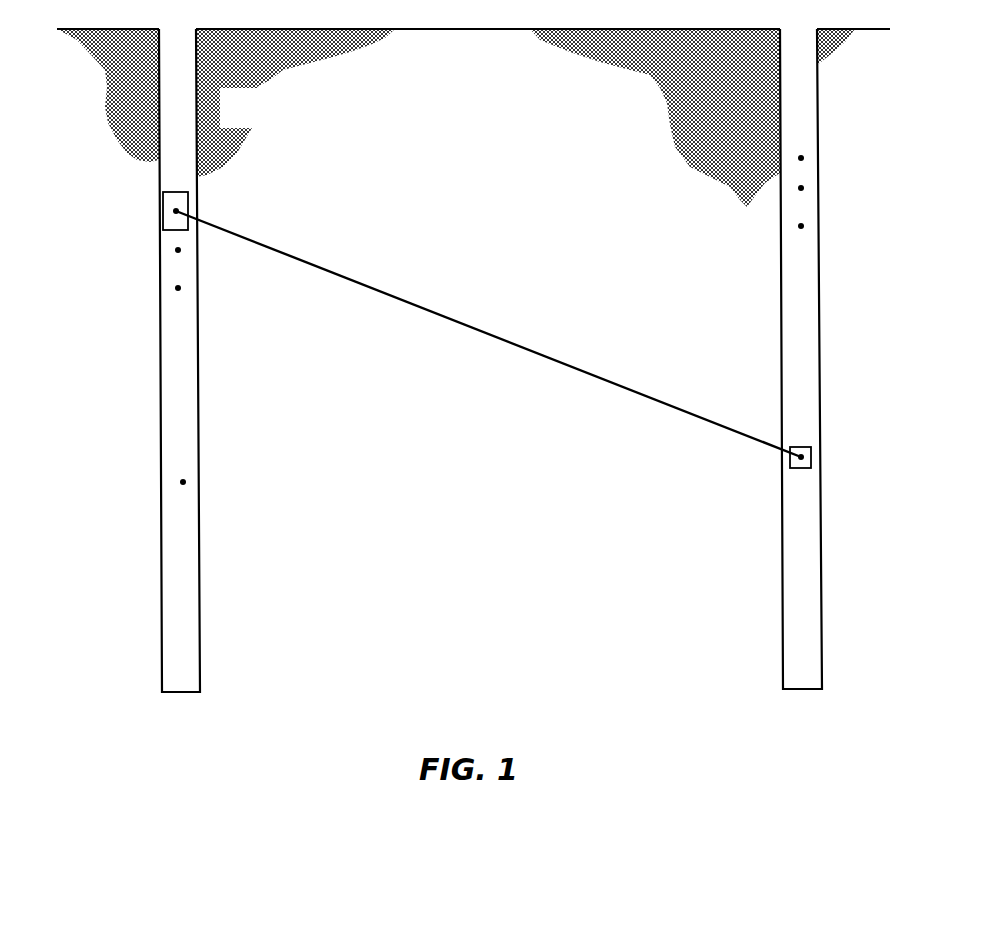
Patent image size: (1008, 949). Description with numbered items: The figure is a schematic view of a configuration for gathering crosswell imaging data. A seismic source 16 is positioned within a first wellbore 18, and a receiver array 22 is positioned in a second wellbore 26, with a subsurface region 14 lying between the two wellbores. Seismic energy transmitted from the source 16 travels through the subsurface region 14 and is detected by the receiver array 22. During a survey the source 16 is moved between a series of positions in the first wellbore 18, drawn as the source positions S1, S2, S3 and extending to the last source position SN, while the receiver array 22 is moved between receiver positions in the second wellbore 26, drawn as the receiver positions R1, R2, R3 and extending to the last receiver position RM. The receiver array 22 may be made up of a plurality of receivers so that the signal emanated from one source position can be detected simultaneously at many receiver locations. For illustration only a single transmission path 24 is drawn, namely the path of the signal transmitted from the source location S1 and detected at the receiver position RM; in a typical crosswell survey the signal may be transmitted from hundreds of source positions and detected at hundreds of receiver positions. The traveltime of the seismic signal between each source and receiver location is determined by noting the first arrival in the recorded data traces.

The subsurface region 14 is at (469, 157).
The source 16 is at (175, 191).
The first wellbore 18 is at (223, 107).
The receiver array 22 is at (790, 468).
The transmission path 24 is at (443, 313).
The second wellbore 26 is at (781, 297).
The first source position S1 is at (176, 211).
The second source position S2 is at (178, 250).
The third source position S3 is at (178, 288).
The last source position SN is at (183, 482).
The first receiver position R1 is at (801, 158).
The second receiver position R2 is at (801, 188).
The third receiver position R3 is at (801, 226).
The last receiver position RM is at (801, 457).